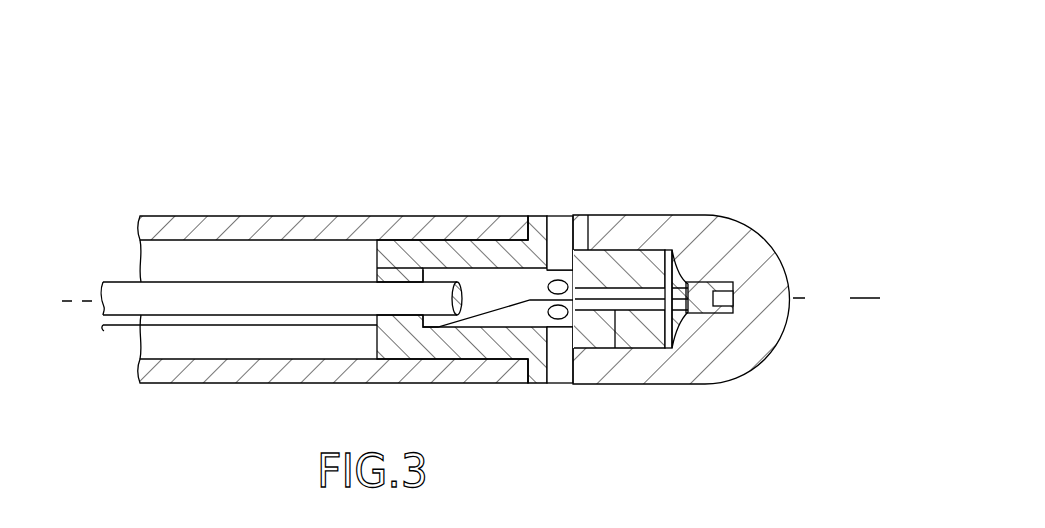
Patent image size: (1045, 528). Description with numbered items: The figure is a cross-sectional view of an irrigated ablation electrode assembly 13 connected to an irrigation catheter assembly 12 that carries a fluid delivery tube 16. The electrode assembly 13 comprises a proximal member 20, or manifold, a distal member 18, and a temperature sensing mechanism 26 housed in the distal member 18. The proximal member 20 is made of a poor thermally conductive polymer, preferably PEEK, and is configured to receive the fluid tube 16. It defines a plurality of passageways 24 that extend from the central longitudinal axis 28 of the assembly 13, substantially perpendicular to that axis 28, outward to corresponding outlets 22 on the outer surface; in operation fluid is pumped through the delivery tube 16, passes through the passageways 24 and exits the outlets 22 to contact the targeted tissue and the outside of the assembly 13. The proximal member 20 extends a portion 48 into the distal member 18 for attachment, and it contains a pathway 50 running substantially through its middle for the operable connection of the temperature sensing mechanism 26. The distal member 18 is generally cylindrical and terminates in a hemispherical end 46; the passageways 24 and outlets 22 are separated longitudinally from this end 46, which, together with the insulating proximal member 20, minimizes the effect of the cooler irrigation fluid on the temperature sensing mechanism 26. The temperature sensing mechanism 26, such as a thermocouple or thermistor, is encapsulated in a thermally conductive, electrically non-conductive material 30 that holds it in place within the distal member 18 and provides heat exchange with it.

The irrigation catheter assembly 12 is at (325, 141).
The ablation electrode assembly 13 is at (681, 281).
The fluid delivery tube 16 is at (215, 283).
The distal member 18 is at (744, 202).
The proximal member 20 is at (507, 253).
The outlets 22 is at (582, 190).
The passageways 24 is at (555, 237).
The temperature sensing mechanism 26 is at (719, 306).
The longitudinal axis 28 is at (805, 298).
The thermally conductive and electrically non-conductive material 30 is at (692, 303).
The end of the distal member 46 is at (807, 344).
The portion of the proximal member 48 is at (572, 352).
The pathway 50 is at (589, 340).